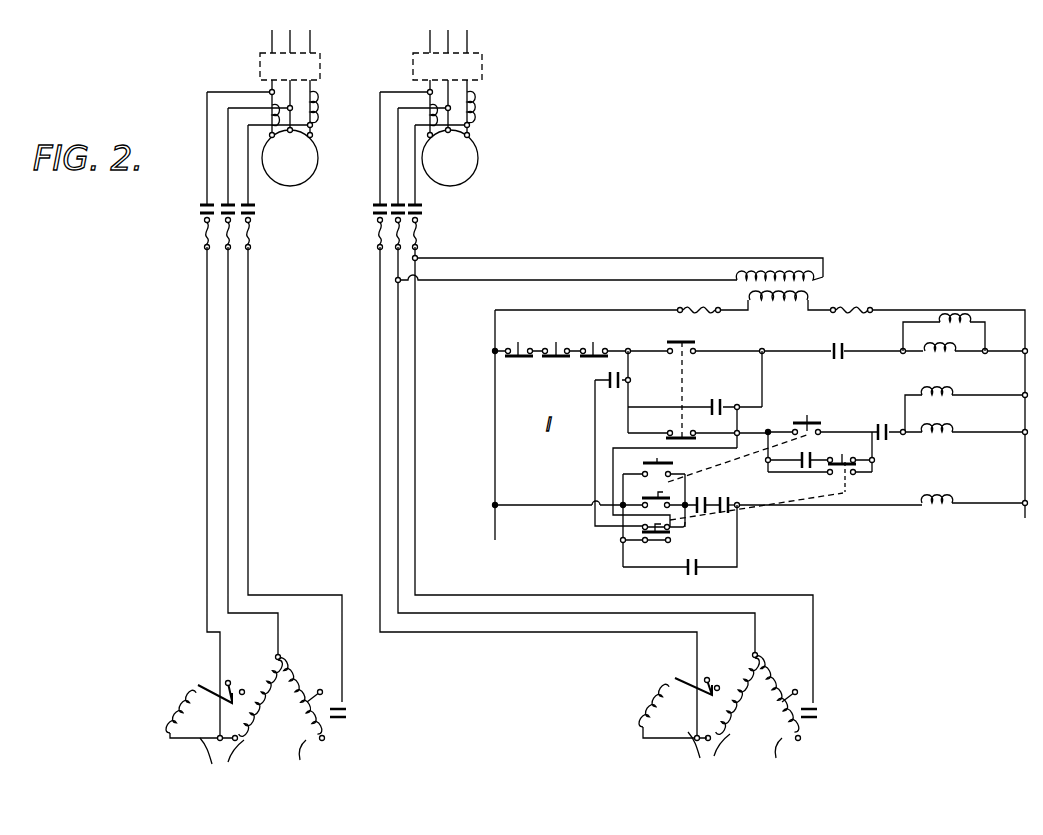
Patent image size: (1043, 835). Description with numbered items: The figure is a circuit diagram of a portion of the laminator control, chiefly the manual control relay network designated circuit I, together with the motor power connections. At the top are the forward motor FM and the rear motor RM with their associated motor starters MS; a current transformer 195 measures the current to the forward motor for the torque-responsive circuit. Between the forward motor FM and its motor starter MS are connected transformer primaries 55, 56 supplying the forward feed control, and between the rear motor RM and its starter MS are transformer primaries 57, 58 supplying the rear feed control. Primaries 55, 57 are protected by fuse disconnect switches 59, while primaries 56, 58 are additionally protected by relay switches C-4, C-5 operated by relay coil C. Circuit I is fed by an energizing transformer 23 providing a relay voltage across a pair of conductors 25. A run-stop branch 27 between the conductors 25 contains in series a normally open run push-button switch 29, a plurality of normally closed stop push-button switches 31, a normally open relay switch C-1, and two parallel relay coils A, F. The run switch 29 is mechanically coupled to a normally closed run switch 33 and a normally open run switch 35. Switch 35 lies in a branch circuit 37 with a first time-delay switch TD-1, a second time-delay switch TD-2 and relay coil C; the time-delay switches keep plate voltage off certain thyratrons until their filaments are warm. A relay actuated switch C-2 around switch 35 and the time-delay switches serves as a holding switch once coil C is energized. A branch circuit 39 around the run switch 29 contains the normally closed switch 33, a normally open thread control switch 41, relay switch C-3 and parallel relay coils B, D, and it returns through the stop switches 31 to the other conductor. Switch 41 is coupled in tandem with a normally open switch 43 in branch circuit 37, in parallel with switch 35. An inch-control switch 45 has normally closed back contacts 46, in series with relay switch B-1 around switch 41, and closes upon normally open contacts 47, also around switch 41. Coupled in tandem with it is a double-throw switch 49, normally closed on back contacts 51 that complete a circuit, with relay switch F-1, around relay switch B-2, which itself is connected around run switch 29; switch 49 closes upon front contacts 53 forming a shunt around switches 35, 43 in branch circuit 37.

The motor starter MS is at (371, 55).
The current transformer 195 is at (318, 102).
The forward motor FM is at (292, 186).
The rear motor RM is at (452, 186).
The fuse disconnect switches 59 is at (252, 222).
The energizing transformer 23 is at (812, 284).
The conductors 25 is at (743, 408).
The run-stop branch 27 is at (793, 351).
The run push-button switch 29 is at (685, 341).
The stop push-button switches 31 is at (520, 342).
The normally closed run switch 33 is at (692, 432).
The normally open run switch 35 is at (674, 463).
The branch circuit 37 is at (540, 503).
The branch circuit 39 is at (768, 428).
The thread control switch 41 is at (812, 420).
The normally open switch 43 is at (654, 494).
The inch-control switch 45 is at (875, 464).
The back contacts 46 is at (846, 448).
The front contacts 47 is at (855, 476).
The double-throw switch 49 is at (686, 537).
The back contacts 51 is at (640, 528).
The front contacts 53 is at (645, 545).
The transformer primary 55 is at (204, 733).
The transformer primary 56 is at (279, 714).
The transformer primary 57 is at (683, 728).
The transformer primary 58 is at (753, 712).
The relay switch C-1 is at (840, 339).
The relay actuated switch C-2 is at (697, 575).
The relay switch C-3 is at (892, 415).
The relay switch C-4 is at (350, 710).
The relay switch C-5 is at (821, 710).
The relay switch F-1 is at (612, 392).
The relay switch B-1 is at (804, 468).
The relay switch B-2 is at (722, 400).
The first time-delay switch TD-1 is at (710, 498).
The second time-delay switch TD-2 is at (742, 505).
The relay coil A is at (945, 355).
The relay coil B is at (945, 437).
The relay coil C is at (945, 508).
The relay coil D is at (947, 400).
The relay coil F is at (958, 327).